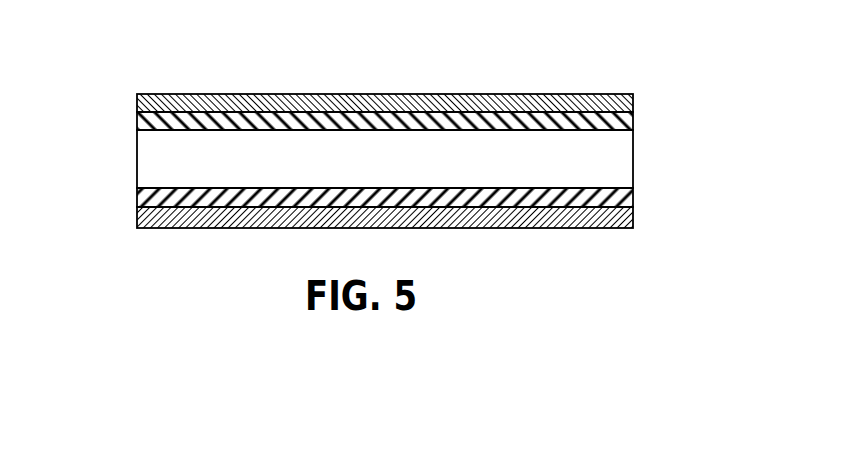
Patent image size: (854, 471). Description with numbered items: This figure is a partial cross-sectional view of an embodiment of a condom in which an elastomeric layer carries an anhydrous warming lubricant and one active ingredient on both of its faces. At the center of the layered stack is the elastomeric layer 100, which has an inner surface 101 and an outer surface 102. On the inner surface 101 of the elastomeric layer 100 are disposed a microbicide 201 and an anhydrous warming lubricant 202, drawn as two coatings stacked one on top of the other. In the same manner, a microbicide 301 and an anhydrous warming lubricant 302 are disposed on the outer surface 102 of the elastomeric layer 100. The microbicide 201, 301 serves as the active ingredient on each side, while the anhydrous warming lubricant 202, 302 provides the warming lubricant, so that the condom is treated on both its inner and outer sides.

The elastomeric layer 100 is at (612, 170).
The inner surface 101 is at (555, 128).
The outer surface 102 is at (527, 188).
The microbicide 201 is at (150, 122).
The anhydrous warming lubricant 202 is at (290, 102).
The microbicide 301 is at (147, 203).
The anhydrous warming lubricant 302 is at (592, 217).